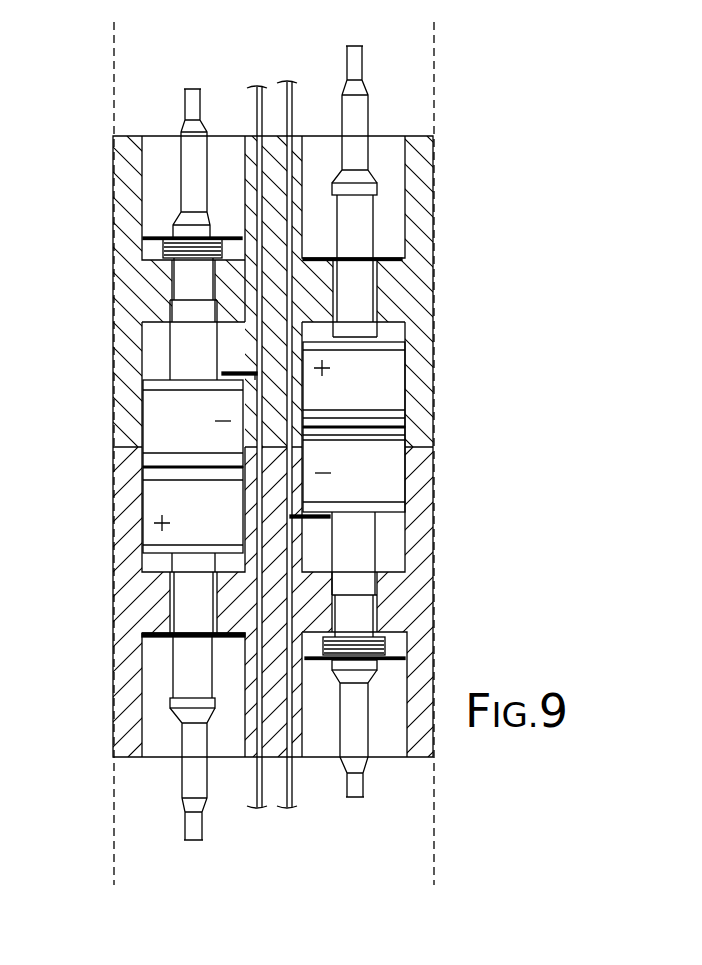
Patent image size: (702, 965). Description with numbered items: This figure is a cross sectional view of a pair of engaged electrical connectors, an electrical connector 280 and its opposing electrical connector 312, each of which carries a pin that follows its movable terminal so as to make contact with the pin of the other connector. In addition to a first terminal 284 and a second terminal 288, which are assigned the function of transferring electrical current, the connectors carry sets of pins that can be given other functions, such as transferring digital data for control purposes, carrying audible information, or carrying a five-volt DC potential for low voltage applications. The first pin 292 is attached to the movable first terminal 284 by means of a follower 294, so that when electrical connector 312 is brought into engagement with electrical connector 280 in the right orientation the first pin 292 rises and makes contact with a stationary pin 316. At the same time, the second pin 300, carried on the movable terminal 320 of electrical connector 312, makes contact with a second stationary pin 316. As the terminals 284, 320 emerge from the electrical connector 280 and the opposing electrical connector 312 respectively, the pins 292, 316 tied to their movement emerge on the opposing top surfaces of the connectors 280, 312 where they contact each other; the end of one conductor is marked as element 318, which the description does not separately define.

The electrical connector 280 is at (113, 229).
The electrical connector 312 is at (113, 692).
The second pin 300 is at (259, 87).
The stationary pin 316 is at (289, 82).
The first conductor end 318 is at (258, 808).
The first pin 292 is at (290, 806).
The terminal 320 is at (173, 425).
The second terminal 288 is at (157, 500).
The first terminal 284 is at (365, 475).
The follower 294 is at (320, 520).